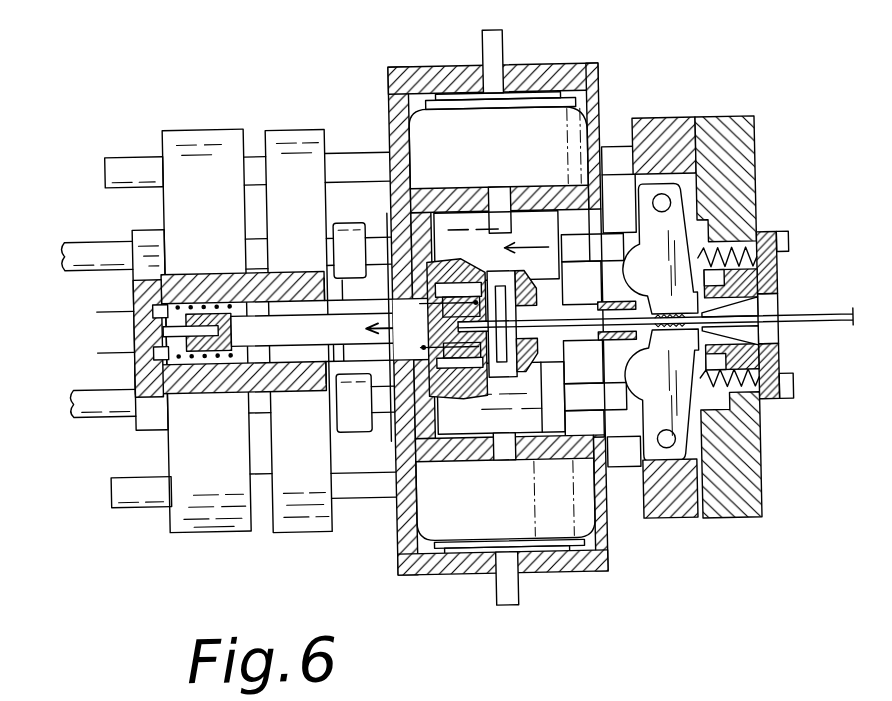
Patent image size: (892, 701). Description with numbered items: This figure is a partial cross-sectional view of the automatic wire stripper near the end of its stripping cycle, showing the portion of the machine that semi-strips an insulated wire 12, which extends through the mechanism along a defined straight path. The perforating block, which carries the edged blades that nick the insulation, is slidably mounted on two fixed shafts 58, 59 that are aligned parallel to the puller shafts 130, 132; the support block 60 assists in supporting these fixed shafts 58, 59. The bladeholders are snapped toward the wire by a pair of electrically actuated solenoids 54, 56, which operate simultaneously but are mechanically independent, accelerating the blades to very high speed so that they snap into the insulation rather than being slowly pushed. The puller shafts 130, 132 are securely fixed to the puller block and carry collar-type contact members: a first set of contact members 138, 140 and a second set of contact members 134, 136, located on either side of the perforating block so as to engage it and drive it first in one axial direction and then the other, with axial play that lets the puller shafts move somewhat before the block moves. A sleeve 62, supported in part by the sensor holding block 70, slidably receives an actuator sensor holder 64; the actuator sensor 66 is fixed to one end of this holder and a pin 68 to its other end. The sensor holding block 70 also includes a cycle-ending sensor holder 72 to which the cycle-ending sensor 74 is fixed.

The insulated wire 12 is at (802, 319).
The solenoid 54 is at (551, 134).
The solenoid 56 is at (555, 522).
The fixed shaft 58 is at (140, 157).
The fixed shaft 59 is at (144, 486).
The support block 60 is at (311, 128).
The sleeve 62 is at (252, 273).
The actuator sensor holder 64 is at (384, 238).
The actuator sensor 66 is at (457, 253).
The pin 68 is at (165, 360).
The sensor holding block 70 is at (217, 128).
The cycle-ending sensor holder 72 is at (148, 234).
The cycle-ending sensor 74 is at (134, 297).
The puller shaft 130 is at (101, 235).
The puller shaft 132 is at (81, 386).
The contact member 134 is at (349, 228).
The contact member 136 is at (354, 418).
The contact member 138 is at (549, 225).
The contact member 140 is at (606, 520).